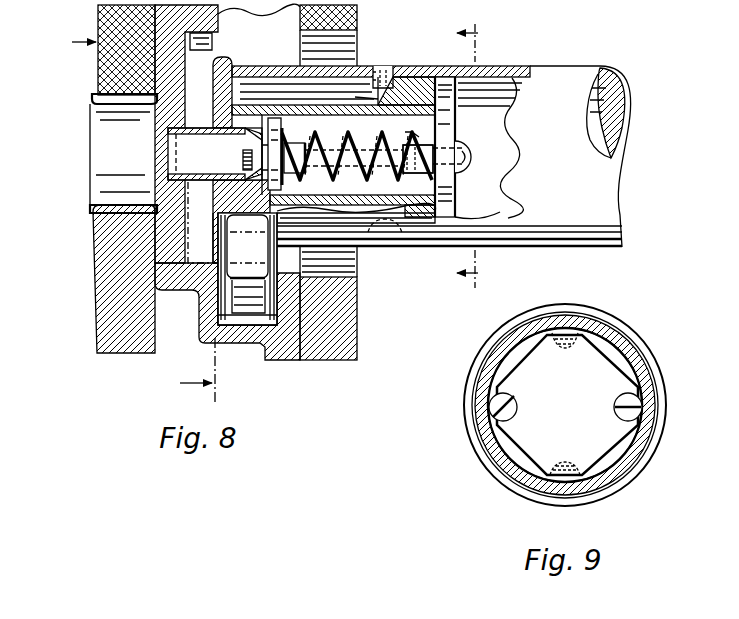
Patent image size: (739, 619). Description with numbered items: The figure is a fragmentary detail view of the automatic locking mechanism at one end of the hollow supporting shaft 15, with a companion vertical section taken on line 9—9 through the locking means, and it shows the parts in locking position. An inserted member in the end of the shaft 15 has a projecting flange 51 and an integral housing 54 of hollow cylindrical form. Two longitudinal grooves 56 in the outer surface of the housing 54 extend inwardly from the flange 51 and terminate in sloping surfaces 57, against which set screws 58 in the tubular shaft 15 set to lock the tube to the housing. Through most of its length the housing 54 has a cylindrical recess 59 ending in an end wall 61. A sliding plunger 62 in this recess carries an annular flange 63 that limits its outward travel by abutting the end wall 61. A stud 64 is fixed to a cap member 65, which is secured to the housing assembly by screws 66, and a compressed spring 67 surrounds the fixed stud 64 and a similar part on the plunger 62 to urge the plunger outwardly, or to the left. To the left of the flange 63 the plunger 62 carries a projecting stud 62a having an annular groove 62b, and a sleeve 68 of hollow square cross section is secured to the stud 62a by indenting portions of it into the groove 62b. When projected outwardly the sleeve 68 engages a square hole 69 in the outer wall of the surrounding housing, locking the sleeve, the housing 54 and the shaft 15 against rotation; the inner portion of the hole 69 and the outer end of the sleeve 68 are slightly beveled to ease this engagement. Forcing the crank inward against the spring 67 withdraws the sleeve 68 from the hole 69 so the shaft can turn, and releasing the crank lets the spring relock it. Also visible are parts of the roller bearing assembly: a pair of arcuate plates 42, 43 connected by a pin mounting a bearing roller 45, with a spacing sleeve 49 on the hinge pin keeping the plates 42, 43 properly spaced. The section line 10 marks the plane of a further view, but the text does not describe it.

In FIG. 8, the section line 9— 9 is at (476, 155).
In FIG. 8, the section line 10- 10 is at (131, 217).
In FIG. 8, the hollow supporting shaft 15 is at (515, 67).
In FIG. 9, the hollow supporting shaft 15 is at (626, 468).
In FIG. 8, the arcuate plate 42 is at (282, 223).
In FIG. 8, the arcuate plate 43 is at (226, 228).
In FIG. 8, the bearing roller 45 is at (255, 264).
In FIG. 8, the spacing sleeve 49 is at (252, 335).
In FIG. 9, the projecting flange 51 is at (612, 497).
In FIG. 8, the housing 54 is at (406, 86).
In FIG. 8, the longitudinal grooves 56 is at (246, 90).
In FIG. 8, the sloping surfaces 57 is at (434, 260).
In FIG. 8, the set screws 58 is at (375, 67).
In FIG. 9, the set screws 58 is at (580, 320).
In FIG. 8, the cylindrical recess 59 is at (322, 112).
In FIG. 8, the end wall 61 is at (268, 106).
In FIG. 8, the sliding plunger 62 is at (318, 174).
In FIG. 8, the projecting stud 62a is at (245, 159).
In FIG. 8, the annular groove 62b is at (252, 147).
In FIG. 8, the annular flange 63 is at (282, 125).
In FIG. 8, the stud 64 is at (412, 176).
In FIG. 8, the cap member 65 is at (457, 128).
In FIG. 9, the cap member 65 is at (579, 430).
In FIG. 8, the screws 66 is at (470, 157).
In FIG. 9, the screws 66 is at (516, 400).
In FIG. 8, the compressed spring 67 is at (368, 131).
In FIG. 8, the sleeve 68 is at (200, 134).
In FIG. 8, the square hole 69 is at (157, 175).